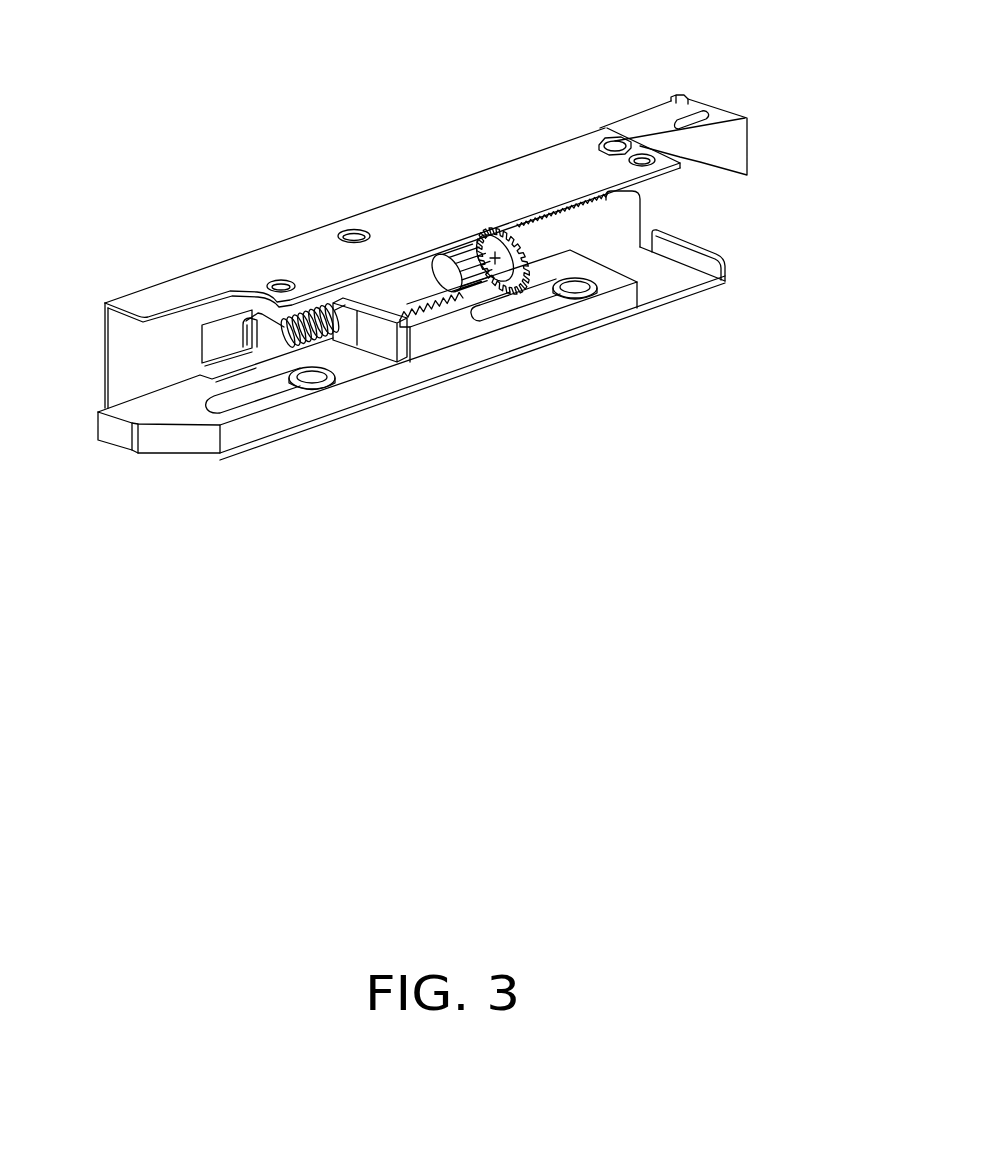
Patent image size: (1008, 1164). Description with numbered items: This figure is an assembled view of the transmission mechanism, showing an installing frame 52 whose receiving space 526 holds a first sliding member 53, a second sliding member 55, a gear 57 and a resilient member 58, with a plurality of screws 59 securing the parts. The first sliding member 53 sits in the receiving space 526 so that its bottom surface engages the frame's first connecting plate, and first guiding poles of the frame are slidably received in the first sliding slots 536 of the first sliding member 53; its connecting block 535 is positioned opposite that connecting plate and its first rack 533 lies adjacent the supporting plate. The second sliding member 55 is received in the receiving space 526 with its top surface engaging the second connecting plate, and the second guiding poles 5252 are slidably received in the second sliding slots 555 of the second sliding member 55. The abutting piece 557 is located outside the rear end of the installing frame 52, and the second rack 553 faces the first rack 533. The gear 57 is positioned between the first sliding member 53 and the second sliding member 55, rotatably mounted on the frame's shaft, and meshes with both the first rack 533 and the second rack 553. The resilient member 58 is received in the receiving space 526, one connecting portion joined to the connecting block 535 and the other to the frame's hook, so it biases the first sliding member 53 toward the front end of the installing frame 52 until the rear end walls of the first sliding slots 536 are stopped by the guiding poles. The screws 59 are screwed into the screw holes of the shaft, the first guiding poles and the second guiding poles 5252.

The installing frame 52 is at (570, 165).
The second guiding poles 5252 is at (350, 233).
The receiving space 526 is at (623, 228).
The first sliding member 53 is at (367, 386).
The first rack 533 is at (433, 310).
The connecting block 535 is at (373, 347).
The first sliding slots 536 is at (250, 405).
The second sliding member 55 is at (647, 124).
The second rack 553 is at (543, 207).
The second sliding slots 555 is at (680, 126).
The abutting piece 557 is at (670, 101).
The gear 57 is at (465, 255).
The resilient member 58 is at (313, 313).
The screws 59 is at (493, 270).